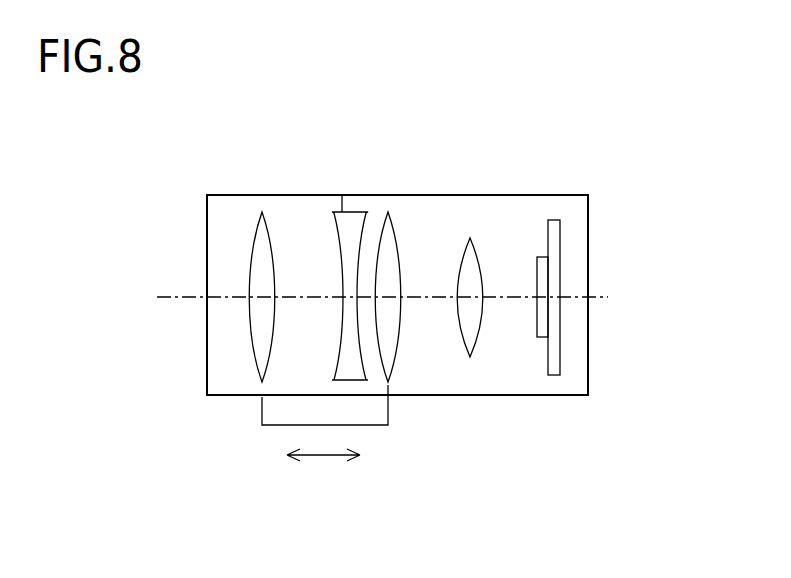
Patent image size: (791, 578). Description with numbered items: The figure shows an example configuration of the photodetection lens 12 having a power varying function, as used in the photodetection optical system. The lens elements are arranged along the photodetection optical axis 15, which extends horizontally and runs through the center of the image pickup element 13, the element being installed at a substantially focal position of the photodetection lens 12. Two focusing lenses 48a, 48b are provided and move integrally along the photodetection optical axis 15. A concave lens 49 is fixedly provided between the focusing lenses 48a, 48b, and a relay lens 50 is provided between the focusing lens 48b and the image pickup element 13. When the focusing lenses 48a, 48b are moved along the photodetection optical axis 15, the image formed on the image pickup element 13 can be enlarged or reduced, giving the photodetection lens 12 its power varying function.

The photodetection lens 12 is at (355, 206).
The image pickup element 13 is at (537, 262).
The photodetection optical axis 15 is at (200, 297).
The focusing lens 48a is at (250, 352).
The focusing lens 48b is at (398, 370).
The concave lens 49 is at (345, 195).
The relay lens 50 is at (480, 350).